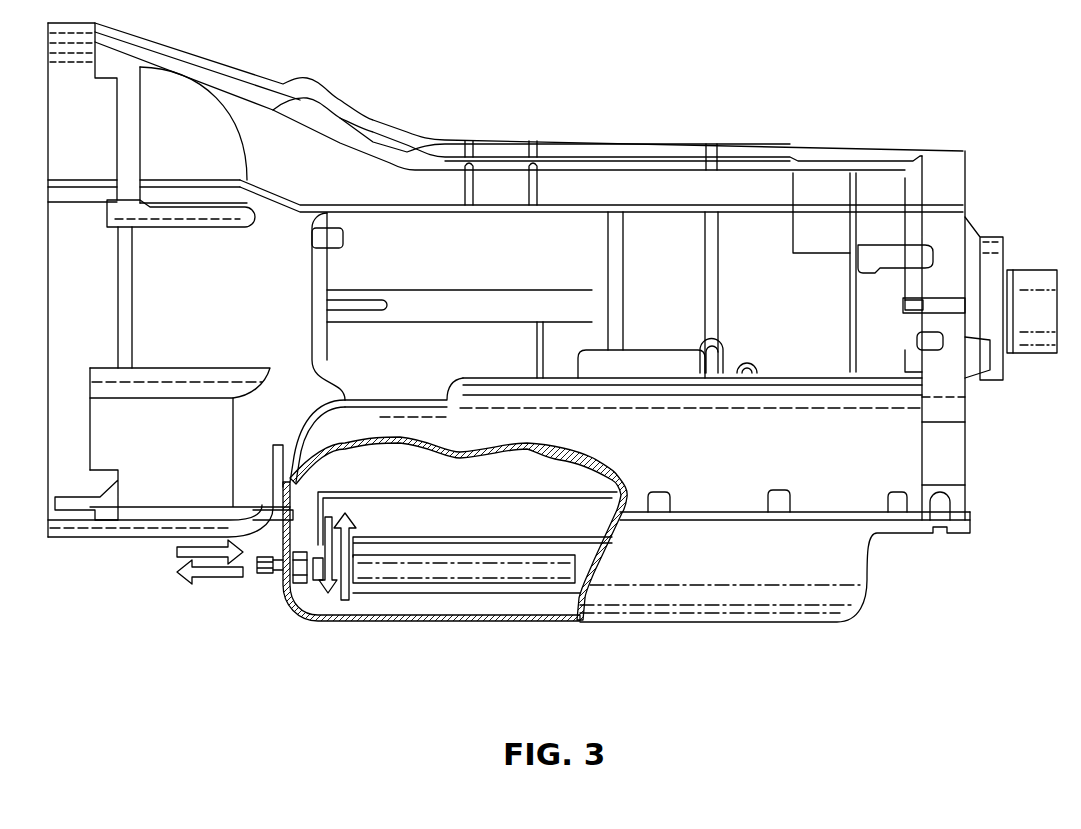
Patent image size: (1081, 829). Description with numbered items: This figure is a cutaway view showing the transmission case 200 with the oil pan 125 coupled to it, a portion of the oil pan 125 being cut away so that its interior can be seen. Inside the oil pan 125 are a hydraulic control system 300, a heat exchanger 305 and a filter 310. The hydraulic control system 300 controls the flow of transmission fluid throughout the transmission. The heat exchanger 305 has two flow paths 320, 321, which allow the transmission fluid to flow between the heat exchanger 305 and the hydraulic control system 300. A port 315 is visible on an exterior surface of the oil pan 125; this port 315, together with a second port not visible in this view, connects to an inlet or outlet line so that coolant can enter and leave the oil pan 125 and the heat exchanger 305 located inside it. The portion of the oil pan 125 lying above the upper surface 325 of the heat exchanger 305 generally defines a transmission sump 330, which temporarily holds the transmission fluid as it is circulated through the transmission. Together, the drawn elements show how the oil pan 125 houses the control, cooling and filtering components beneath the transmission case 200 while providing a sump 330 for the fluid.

The transmission case 200 is at (846, 150).
The oil pan 125 is at (847, 597).
The hydraulic control system 300 is at (498, 527).
The heat exchanger 305 is at (453, 607).
The filter 310 is at (583, 570).
The port 315 is at (265, 578).
The flow path 320 is at (327, 620).
The flow path 321 is at (347, 620).
The upper surface 325 is at (510, 595).
The transmission sump 330 is at (623, 497).